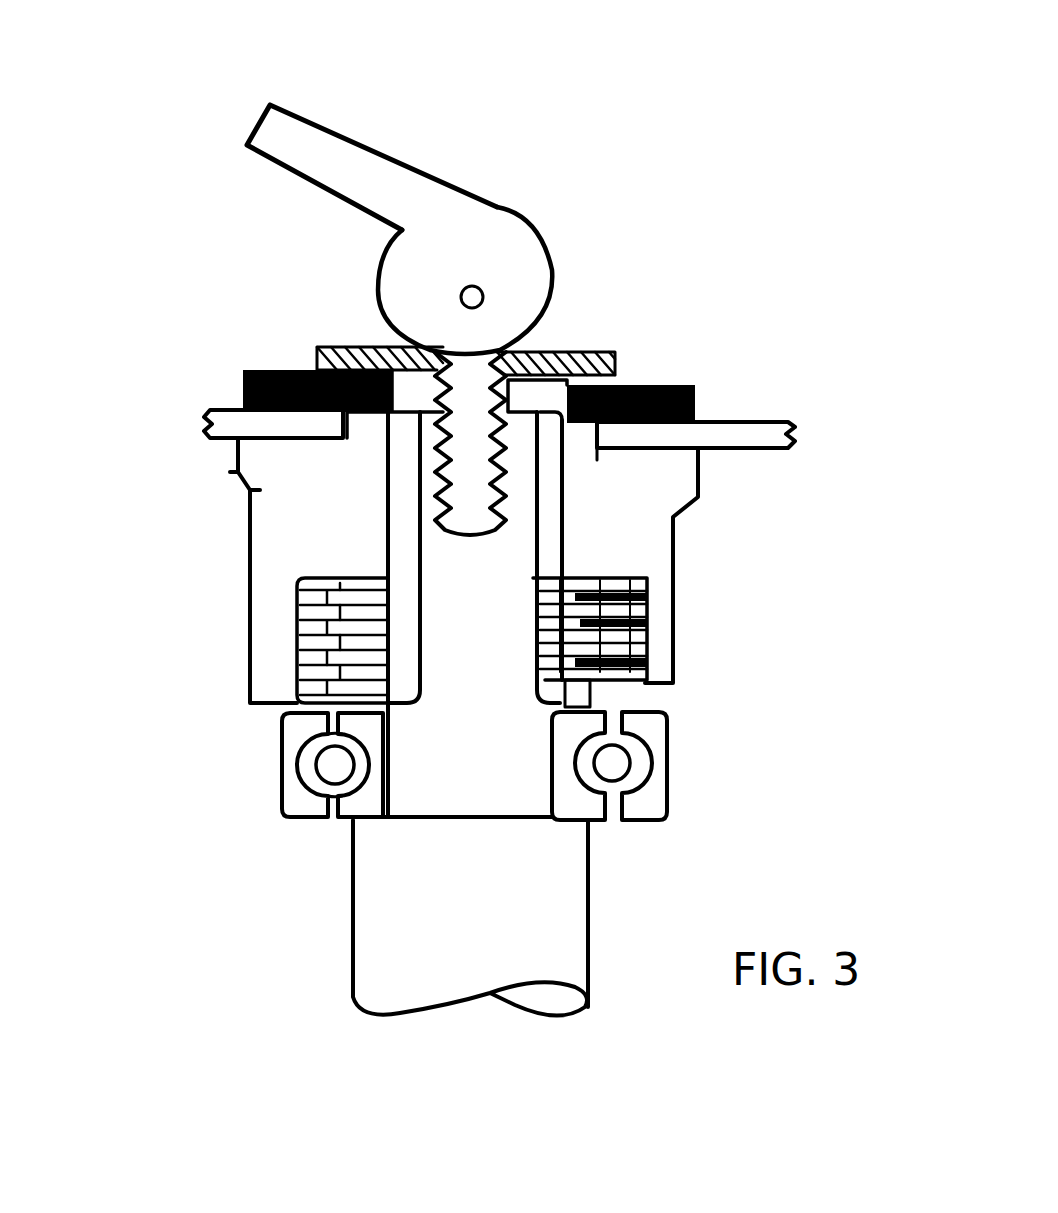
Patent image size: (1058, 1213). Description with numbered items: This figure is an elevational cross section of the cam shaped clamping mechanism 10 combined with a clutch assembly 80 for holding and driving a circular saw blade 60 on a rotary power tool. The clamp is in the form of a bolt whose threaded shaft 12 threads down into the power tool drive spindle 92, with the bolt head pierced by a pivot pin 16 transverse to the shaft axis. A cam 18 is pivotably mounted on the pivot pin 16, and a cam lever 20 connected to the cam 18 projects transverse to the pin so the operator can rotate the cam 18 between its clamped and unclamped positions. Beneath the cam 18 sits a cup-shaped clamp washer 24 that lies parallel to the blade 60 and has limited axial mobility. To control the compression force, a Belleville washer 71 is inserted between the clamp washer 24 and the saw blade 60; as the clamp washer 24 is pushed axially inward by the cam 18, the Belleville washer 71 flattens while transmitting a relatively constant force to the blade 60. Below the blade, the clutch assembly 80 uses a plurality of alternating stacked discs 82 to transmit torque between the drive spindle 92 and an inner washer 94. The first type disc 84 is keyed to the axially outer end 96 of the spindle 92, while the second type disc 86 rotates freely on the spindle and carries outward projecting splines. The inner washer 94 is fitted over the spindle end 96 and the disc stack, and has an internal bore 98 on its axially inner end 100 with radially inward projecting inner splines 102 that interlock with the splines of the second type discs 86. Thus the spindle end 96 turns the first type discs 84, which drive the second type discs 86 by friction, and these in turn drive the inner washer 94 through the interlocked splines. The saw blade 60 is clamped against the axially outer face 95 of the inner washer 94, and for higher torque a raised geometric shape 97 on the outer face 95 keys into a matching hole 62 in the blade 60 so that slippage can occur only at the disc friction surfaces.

The cam shaped clamping mechanism 10 is at (630, 265).
The threaded shaft 12 is at (477, 407).
The pivot pin 16 is at (483, 292).
The cam 18 is at (470, 237).
The cam lever 20 is at (303, 152).
The clamp washer 24 is at (617, 353).
The circular saw blade 60 is at (800, 423).
The matching hole 62 is at (243, 378).
The Belleville washer 71 is at (692, 385).
The clutch assembly 80 is at (695, 545).
The stacked discs 82 is at (650, 695).
The first type disc 84 is at (297, 665).
The second type disc 86 is at (297, 682).
The drive spindle 92 is at (478, 940).
The inner washer 94 is at (343, 532).
The axially outer face 95 is at (623, 452).
The axially outer end 96 is at (490, 638).
The raised geometric shape 97 is at (367, 427).
The internal bore 98 is at (293, 580).
The axially inner end 100 is at (257, 708).
The inner splines 102 is at (297, 603).